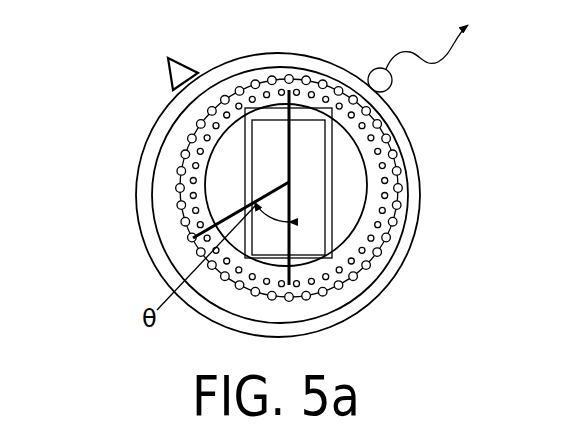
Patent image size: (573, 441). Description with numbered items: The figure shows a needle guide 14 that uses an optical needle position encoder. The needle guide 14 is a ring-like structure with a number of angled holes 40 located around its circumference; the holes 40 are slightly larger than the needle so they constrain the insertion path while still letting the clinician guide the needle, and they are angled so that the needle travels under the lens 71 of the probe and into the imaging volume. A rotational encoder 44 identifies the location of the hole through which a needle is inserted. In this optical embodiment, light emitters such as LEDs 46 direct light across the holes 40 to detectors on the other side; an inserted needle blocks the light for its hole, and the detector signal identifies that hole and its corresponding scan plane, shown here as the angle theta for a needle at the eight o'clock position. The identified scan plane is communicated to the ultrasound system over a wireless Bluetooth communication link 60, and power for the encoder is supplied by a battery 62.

The needle guide 14 is at (190, 255).
The holes 40 is at (296, 78).
The rotational encoder 44 is at (147, 220).
The LEDs 46 is at (190, 128).
The Bluetooth communication link 60 is at (400, 92).
The battery 62 is at (172, 66).
The lens 71 is at (315, 140).